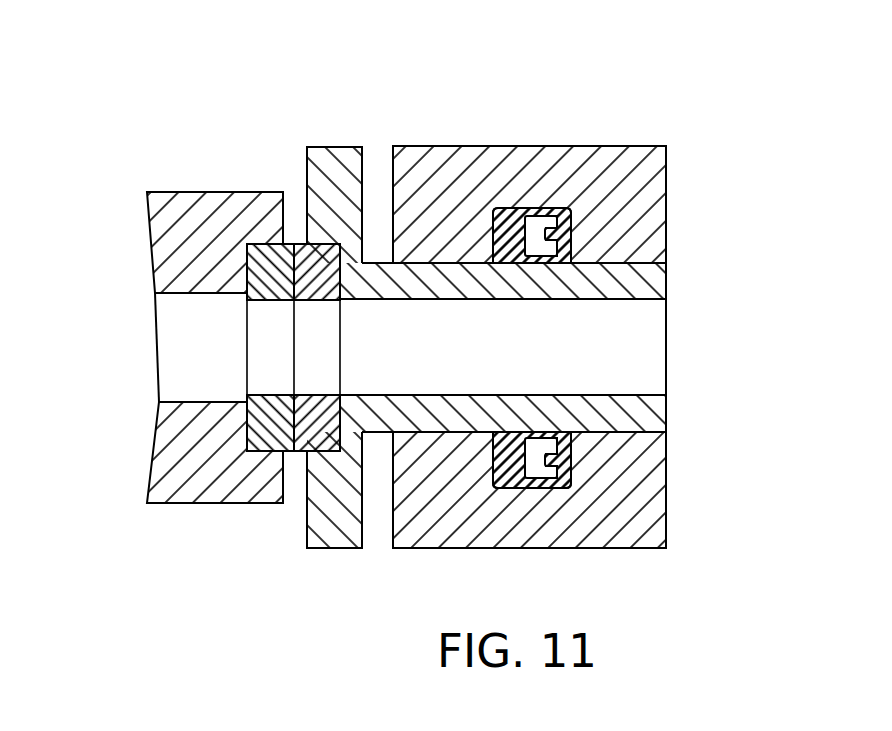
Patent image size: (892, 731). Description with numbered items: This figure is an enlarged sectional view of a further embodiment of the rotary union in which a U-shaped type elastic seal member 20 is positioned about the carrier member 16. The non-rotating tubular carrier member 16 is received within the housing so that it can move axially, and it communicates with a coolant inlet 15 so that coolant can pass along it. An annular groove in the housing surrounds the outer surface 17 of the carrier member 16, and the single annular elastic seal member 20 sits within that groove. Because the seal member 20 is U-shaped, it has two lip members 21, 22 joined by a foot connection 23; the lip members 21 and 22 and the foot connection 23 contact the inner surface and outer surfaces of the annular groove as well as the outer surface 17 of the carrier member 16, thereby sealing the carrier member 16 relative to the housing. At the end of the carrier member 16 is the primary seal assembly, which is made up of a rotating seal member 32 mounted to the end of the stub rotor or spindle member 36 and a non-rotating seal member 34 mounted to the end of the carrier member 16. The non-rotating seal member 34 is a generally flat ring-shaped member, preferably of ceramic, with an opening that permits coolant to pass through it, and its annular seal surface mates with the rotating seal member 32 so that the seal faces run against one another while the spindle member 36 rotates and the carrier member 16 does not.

The coolant inlet 15 is at (668, 327).
The tubular carrier member 16 is at (643, 275).
The outer surface 17 is at (556, 248).
The elastic seal member 20 is at (523, 208).
The lip member 21 is at (555, 208).
The lip member 22 is at (572, 213).
The foot connection 23 is at (497, 210).
The rotating seal member 32 is at (273, 277).
The non-rotating seal member 34 is at (363, 218).
The spindle member 36 is at (198, 220).